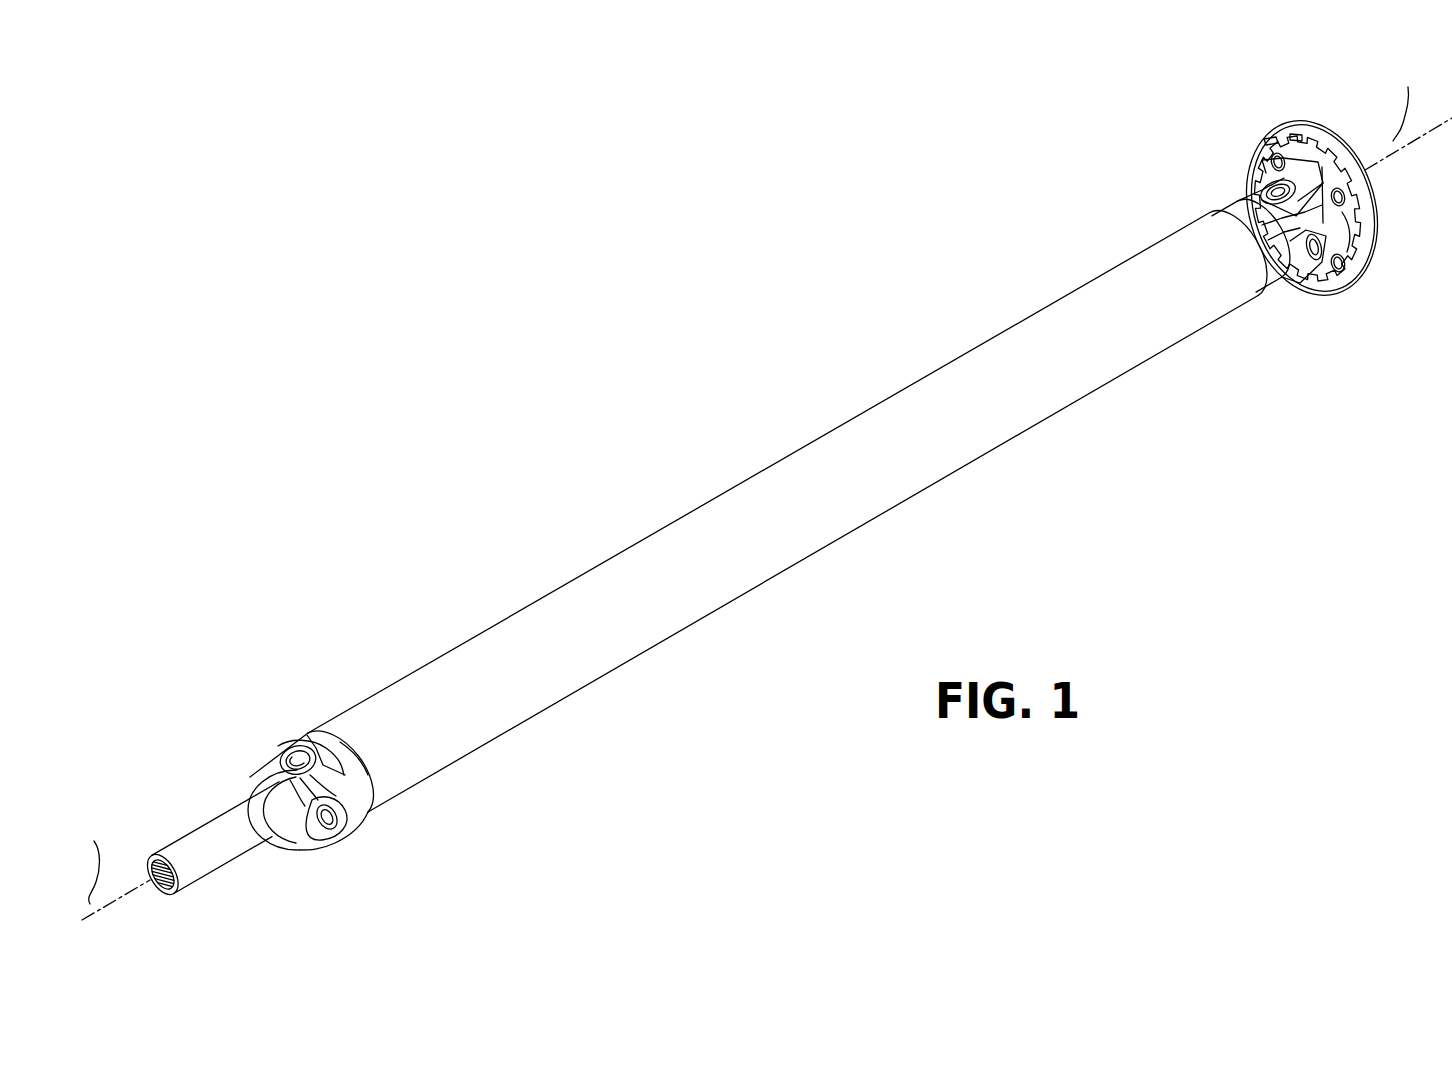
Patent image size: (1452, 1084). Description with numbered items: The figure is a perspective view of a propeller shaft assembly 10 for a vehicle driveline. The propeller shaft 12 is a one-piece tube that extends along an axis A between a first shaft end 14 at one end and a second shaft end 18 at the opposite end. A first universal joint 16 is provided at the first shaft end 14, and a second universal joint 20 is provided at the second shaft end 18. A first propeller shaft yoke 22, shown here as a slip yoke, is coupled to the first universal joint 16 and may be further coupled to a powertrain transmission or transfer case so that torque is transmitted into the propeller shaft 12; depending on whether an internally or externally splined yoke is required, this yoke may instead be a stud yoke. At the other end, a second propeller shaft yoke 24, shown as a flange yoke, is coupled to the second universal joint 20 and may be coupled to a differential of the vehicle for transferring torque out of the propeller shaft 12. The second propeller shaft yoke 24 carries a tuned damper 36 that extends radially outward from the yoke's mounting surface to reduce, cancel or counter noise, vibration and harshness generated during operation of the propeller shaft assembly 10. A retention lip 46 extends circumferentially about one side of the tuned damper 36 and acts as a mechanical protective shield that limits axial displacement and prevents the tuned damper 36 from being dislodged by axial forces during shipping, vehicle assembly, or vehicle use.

The propeller shaft assembly 10 is at (580, 489).
The propeller shaft 12 is at (725, 604).
The first shaft end 14 is at (375, 787).
The first universal joint 16 is at (321, 840).
The second shaft end 18 is at (1265, 292).
The second universal joint 20 is at (1304, 277).
The first propeller shaft yoke 22 is at (189, 834).
The second propeller shaft yoke 24 is at (1266, 181).
The tuned damper 36 is at (1380, 248).
The retention lip 46 is at (1297, 136).